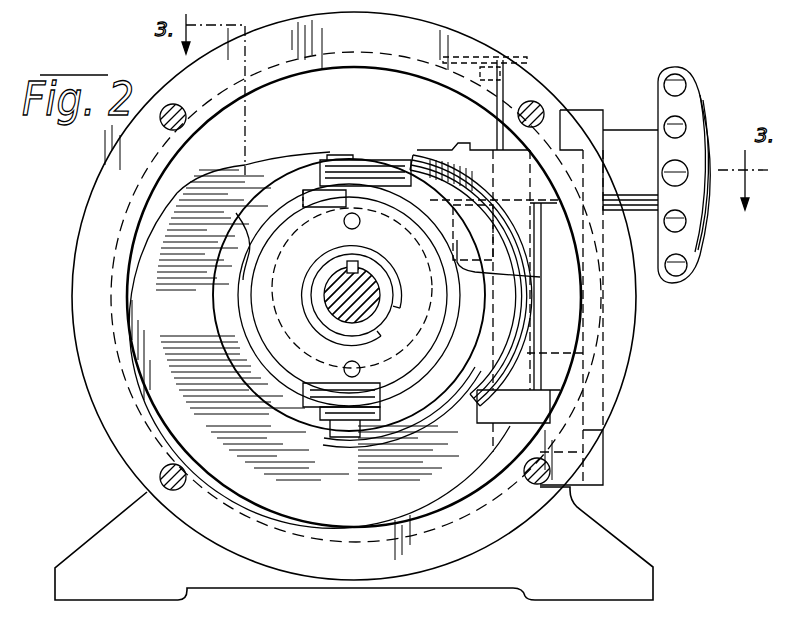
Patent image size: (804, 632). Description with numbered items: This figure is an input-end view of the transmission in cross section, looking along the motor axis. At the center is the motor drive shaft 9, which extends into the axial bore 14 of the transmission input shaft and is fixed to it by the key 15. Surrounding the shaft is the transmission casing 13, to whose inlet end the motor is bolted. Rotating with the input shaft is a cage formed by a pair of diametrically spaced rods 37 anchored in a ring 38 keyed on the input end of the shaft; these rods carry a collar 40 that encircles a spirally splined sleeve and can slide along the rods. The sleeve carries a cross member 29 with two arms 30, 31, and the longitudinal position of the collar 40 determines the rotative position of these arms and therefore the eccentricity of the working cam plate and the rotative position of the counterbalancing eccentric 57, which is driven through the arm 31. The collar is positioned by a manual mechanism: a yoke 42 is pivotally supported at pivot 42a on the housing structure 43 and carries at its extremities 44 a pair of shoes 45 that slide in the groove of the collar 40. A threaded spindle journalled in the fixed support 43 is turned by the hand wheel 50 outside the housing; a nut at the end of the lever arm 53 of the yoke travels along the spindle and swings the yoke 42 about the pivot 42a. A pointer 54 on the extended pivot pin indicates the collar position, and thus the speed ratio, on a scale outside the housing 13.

The drive shaft 9 is at (328, 285).
The transmission casing 13 is at (117, 451).
The axial bore 14 is at (332, 268).
The key 15 is at (358, 268).
The cross member 29 is at (270, 313).
The arm 30 is at (243, 222).
The arm 31 is at (437, 425).
The rods 37 is at (361, 222).
The ring 38 is at (275, 330).
The collar 40 is at (236, 284).
The yoke 42 is at (398, 170).
The pivot 42a is at (583, 354).
The housing structure 43 is at (468, 163).
The extremities 44 is at (327, 158).
The shoes 45 is at (303, 196).
The hand wheel 50 is at (694, 270).
The lever arm 53 is at (530, 277).
The pointer 54 is at (466, 60).
The counterbalancing eccentric 57 is at (167, 378).